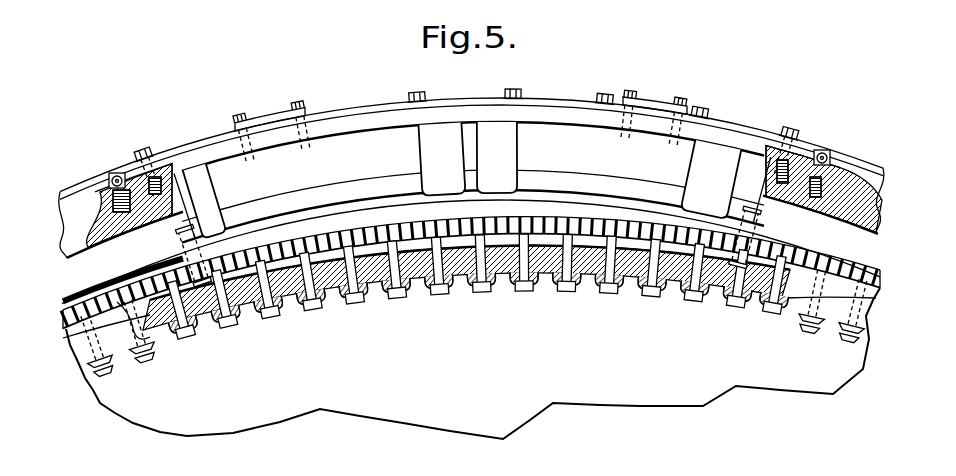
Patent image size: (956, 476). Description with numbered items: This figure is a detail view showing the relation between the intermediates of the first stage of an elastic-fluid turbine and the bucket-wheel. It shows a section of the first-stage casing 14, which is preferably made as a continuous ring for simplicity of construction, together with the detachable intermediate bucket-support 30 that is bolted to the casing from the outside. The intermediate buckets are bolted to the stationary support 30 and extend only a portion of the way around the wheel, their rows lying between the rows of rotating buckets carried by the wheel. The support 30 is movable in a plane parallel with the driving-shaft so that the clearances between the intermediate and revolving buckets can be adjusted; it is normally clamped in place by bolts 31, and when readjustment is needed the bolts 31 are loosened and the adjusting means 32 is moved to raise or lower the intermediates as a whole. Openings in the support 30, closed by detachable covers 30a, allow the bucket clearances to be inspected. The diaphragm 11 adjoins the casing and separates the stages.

The diaphragm 11 is at (471, 319).
The first-stage casing 14 is at (88, 222).
The detachable intermediate bucket-support 30 is at (190, 157).
The detachable cover 30a is at (283, 115).
The bolt 31 is at (517, 95).
The adjusting means 32 is at (822, 152).